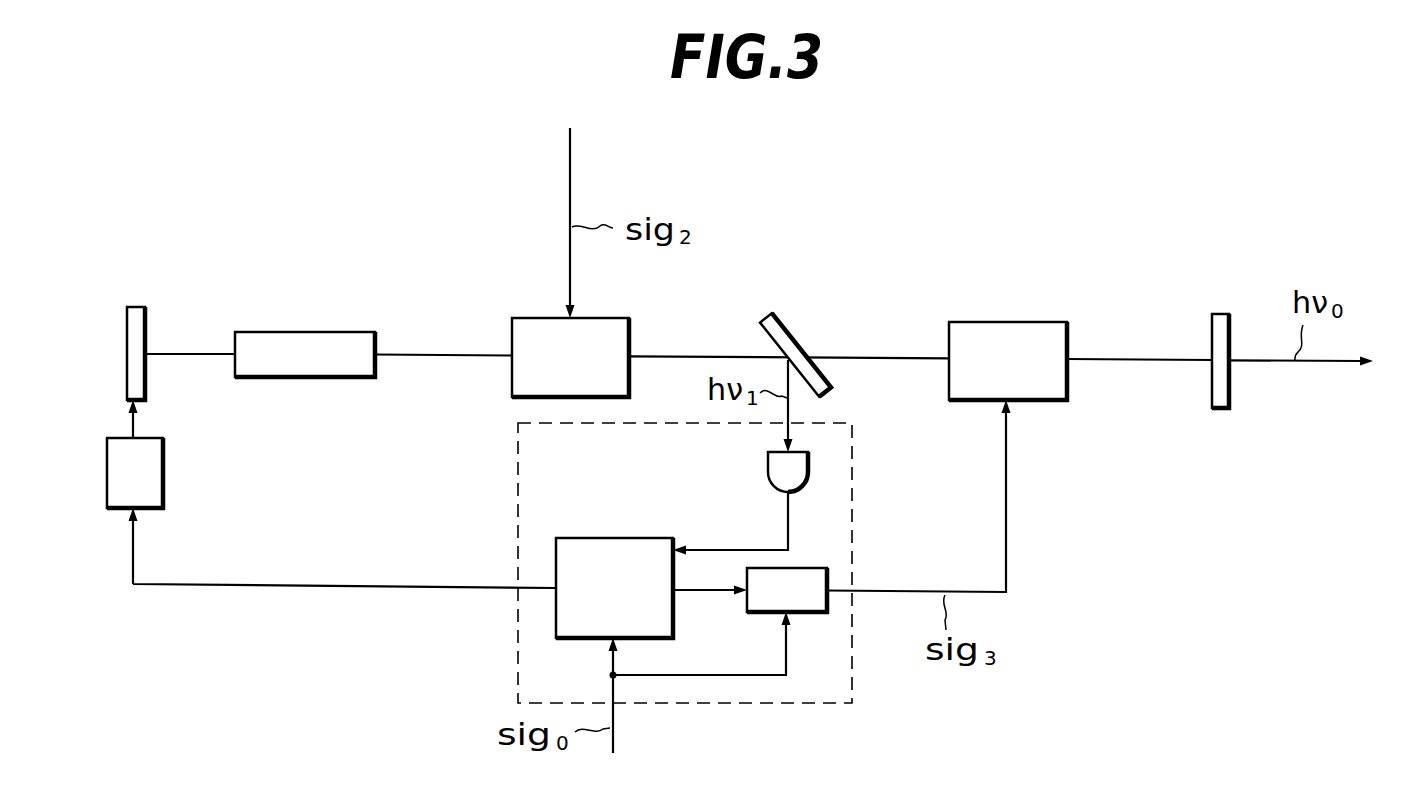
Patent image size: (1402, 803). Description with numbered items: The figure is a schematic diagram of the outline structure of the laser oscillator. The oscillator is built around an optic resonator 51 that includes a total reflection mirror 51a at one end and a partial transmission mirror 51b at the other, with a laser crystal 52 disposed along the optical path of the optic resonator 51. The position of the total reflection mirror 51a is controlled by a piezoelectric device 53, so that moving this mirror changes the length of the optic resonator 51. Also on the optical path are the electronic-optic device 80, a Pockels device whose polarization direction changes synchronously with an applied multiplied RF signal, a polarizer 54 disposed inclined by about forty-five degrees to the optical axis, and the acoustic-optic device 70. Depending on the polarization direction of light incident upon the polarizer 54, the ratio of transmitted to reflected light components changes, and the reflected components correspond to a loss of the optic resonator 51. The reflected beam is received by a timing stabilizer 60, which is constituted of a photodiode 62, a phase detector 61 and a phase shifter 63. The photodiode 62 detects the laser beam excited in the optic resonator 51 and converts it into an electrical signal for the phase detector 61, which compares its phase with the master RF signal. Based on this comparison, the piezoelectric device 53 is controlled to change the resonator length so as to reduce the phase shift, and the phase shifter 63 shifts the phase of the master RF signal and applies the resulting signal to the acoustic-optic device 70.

The optic resonator 51 is at (436, 330).
The total reflection mirror 51a is at (137, 305).
The partial transmission mirror 51b is at (1213, 313).
The laser crystal 52 is at (322, 380).
The piezoelectric device 53 is at (163, 496).
The polarizer 54 is at (780, 318).
The timing stabilizer 60 is at (790, 705).
The phase detector 61 is at (615, 537).
The photodiode 62 is at (767, 467).
The phase shifter 63 is at (750, 613).
The acoustic-optic device 70 is at (1013, 320).
The electronic-optic device 80 is at (512, 388).